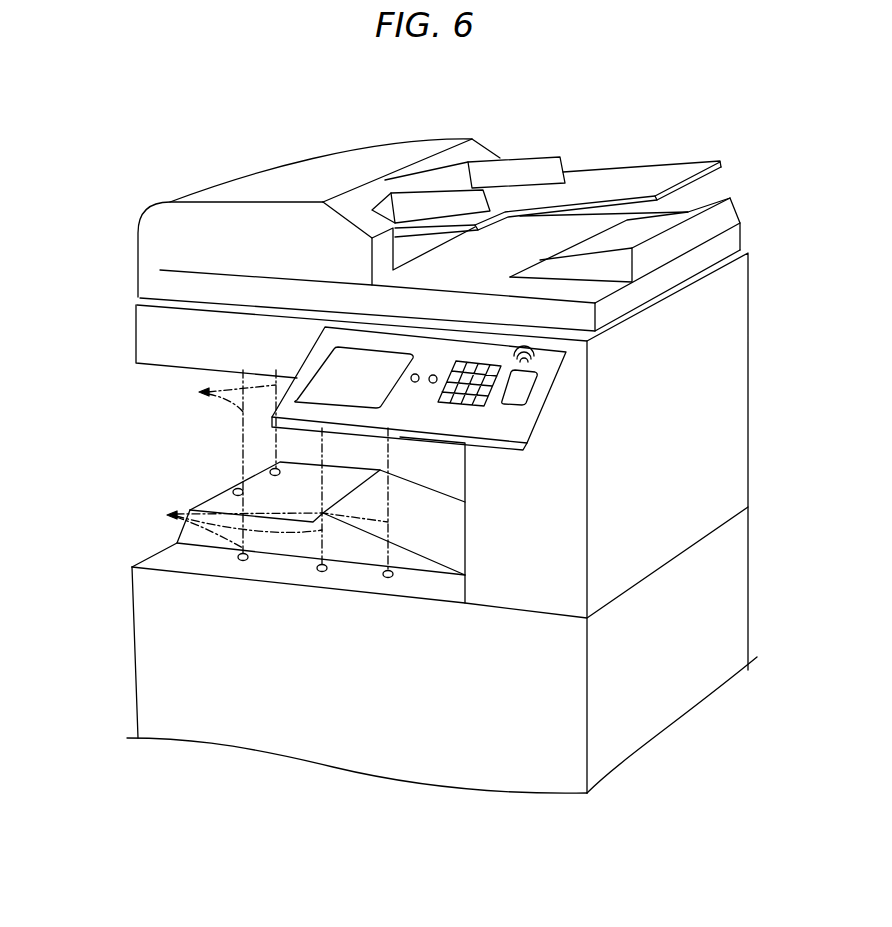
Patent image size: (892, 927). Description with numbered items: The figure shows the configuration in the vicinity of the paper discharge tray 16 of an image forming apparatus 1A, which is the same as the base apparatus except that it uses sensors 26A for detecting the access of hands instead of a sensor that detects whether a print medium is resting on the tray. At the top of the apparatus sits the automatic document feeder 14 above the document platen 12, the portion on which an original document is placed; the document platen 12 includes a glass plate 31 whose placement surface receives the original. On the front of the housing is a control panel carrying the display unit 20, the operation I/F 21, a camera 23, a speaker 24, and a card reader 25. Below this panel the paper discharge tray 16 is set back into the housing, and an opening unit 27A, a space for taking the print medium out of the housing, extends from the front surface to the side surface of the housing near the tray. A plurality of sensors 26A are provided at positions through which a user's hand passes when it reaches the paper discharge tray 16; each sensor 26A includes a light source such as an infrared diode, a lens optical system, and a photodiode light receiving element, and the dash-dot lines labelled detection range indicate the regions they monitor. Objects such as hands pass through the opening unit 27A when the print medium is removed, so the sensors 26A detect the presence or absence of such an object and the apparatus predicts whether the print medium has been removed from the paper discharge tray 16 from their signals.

The image forming apparatus 1A is at (473, 108).
The automatic document feeder 14 is at (193, 223).
The glass plate 31 is at (140, 298).
The document platen 12 is at (136, 330).
The display unit 20 is at (325, 349).
The camera 23 is at (413, 383).
The speaker 24 is at (432, 384).
The operation I/F 21 is at (478, 407).
The card reader 25 is at (513, 405).
The opening unit 27A is at (180, 432).
The sensor 26A is at (270, 472).
The paper discharge tray 16 is at (370, 490).